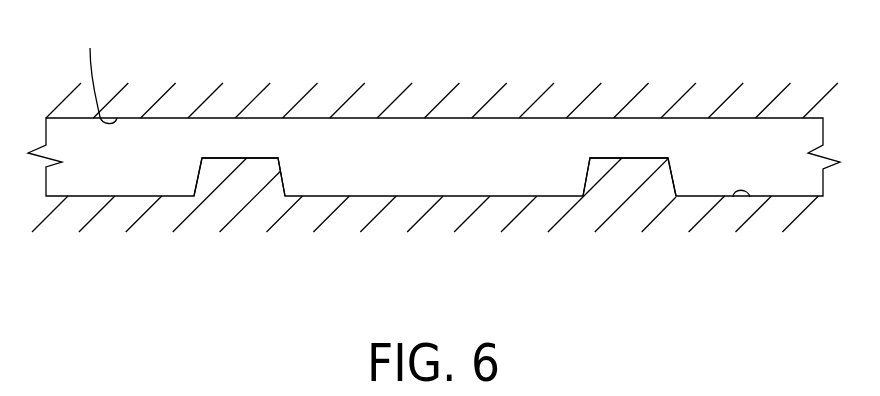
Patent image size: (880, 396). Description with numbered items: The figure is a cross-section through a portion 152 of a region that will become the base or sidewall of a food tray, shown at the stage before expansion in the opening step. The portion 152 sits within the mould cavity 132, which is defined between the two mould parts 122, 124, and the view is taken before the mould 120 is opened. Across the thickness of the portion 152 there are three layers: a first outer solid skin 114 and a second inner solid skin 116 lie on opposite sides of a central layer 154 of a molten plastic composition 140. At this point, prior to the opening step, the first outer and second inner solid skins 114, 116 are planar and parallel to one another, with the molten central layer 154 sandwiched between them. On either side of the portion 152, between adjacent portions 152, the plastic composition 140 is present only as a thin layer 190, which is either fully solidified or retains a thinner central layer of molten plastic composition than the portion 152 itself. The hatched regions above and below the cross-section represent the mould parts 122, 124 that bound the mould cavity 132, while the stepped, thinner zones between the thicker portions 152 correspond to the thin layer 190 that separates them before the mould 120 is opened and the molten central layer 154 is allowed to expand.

The mould 120 is at (470, 93).
The mould part 124 is at (143, 92).
The mould part 122 is at (207, 218).
The mould cavity 132 is at (95, 73).
The first outer solid skin 114 is at (733, 197).
The thin layer 190 is at (242, 142).
The plastic composition 140 is at (298, 143).
The central layer 154 is at (378, 165).
The portion 152 is at (573, 165).
The second inner solid skin 116 is at (712, 142).